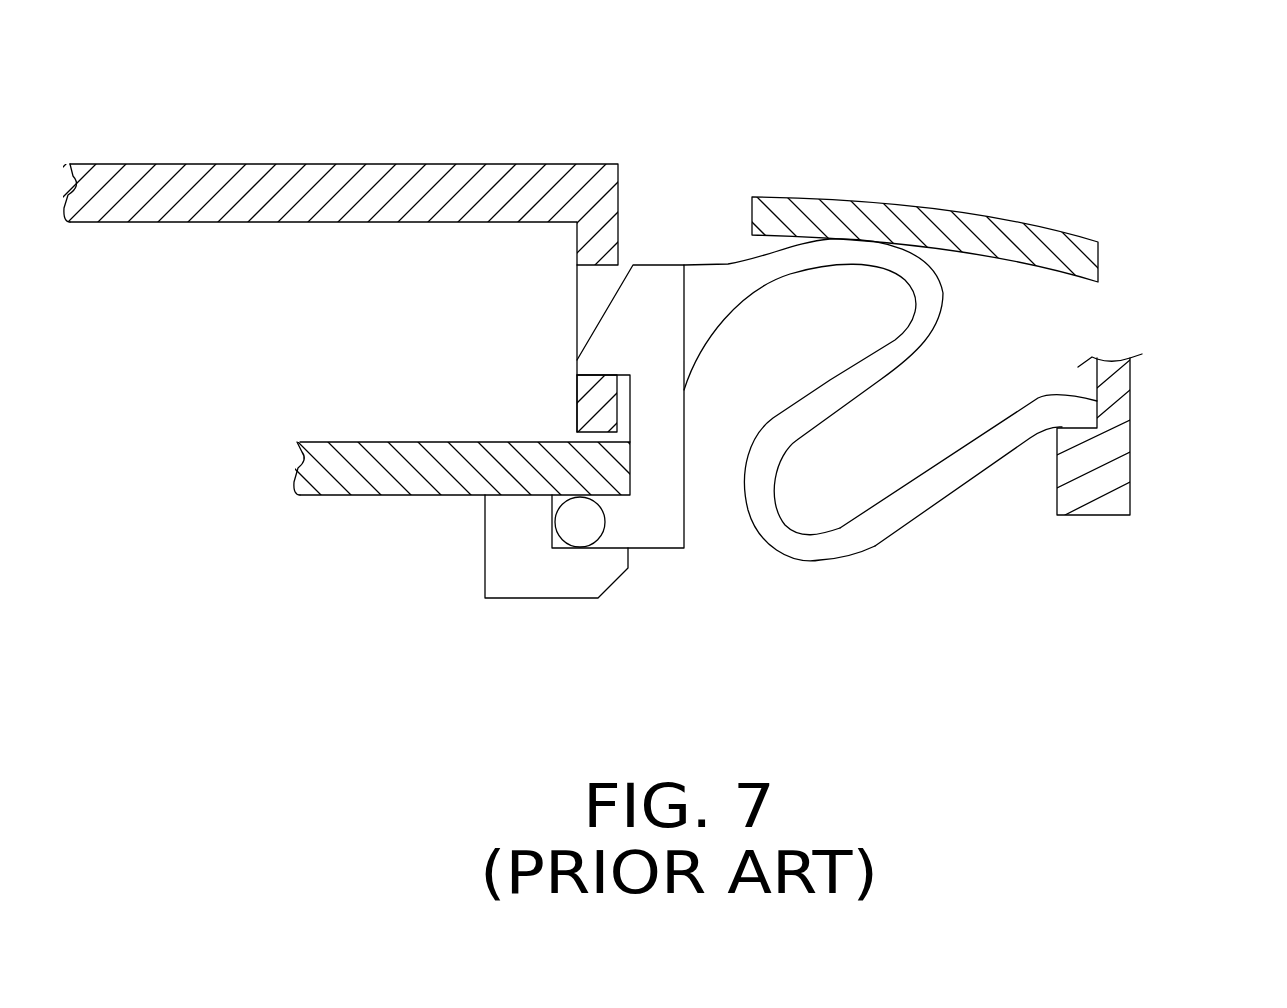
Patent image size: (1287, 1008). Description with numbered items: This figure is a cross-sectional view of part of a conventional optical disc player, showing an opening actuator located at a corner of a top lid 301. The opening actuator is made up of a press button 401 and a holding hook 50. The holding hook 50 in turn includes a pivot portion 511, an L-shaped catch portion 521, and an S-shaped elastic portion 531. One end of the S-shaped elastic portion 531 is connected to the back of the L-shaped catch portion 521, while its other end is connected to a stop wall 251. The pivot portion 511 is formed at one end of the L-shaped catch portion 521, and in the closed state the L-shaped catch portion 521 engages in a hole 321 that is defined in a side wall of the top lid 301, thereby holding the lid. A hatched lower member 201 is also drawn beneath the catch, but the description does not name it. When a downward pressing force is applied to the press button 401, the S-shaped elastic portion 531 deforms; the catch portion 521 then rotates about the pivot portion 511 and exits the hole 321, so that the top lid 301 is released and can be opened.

The top lid 301 is at (204, 190).
The hole 321 is at (588, 297).
The L-shaped catch portion 521 is at (655, 293).
The pivot portion 511 is at (587, 520).
The second housing 201 is at (347, 470).
The press button 401 is at (892, 227).
The holding hook 50 is at (872, 568).
The S-shaped elastic portion 531 is at (960, 467).
The stop wall 251 is at (1113, 393).